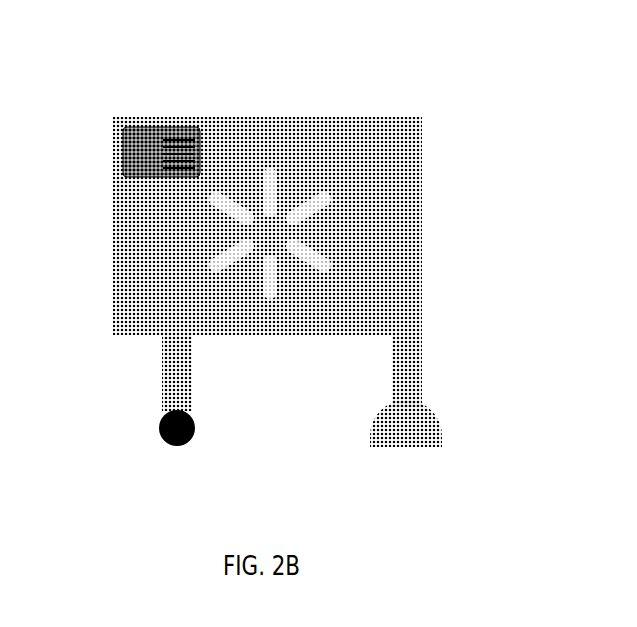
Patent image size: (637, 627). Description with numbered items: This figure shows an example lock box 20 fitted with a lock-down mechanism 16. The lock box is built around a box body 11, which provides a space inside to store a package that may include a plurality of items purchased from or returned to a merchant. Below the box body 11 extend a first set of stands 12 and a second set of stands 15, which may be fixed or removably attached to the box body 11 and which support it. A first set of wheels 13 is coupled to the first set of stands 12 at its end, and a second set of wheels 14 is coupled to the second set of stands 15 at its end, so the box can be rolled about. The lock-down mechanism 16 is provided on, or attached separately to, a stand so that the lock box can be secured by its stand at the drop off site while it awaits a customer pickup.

The device 20 is at (285, 82).
The box body 11 is at (105, 192).
The first set of stands 12 is at (420, 377).
The first set of wheels 13 is at (405, 448).
The second set of wheels 14 is at (157, 430).
The second set of stands 15 is at (162, 387).
The lock-down mechanism 16 is at (427, 413).